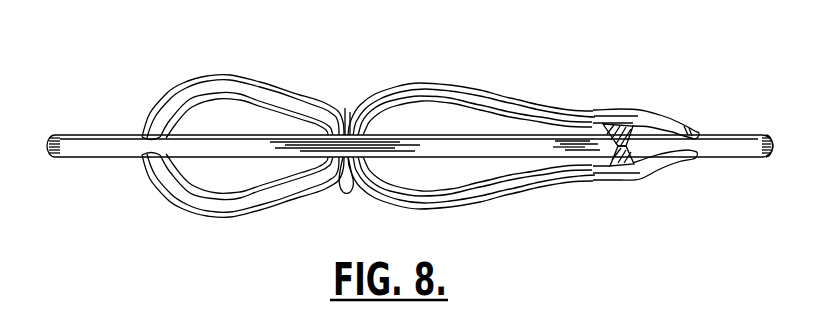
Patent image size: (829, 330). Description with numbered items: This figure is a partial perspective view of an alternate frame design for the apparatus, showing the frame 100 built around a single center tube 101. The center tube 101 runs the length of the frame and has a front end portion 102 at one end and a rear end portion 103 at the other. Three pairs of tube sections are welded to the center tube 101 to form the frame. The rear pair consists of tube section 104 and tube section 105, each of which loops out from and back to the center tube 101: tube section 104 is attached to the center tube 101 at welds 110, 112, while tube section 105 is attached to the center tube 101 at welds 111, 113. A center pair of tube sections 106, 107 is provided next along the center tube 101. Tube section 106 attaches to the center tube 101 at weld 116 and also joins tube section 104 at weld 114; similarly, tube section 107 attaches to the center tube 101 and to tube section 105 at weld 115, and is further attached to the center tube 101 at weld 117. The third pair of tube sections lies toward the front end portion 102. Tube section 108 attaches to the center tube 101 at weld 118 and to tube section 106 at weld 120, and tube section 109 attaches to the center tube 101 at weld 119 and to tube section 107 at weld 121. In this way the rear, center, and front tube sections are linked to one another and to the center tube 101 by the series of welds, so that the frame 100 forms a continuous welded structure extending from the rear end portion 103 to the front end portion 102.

The frame 100 is at (163, 64).
The center tube 101 is at (720, 150).
The front end portion 102 is at (758, 137).
The rear end portion 103 is at (48, 156).
The tube section 104 is at (254, 79).
The tube section 105 is at (273, 200).
The tube section 106 is at (540, 105).
The tube section 107 is at (580, 185).
The tube section 108 is at (690, 123).
The tube section 109 is at (637, 173).
The weld 110 is at (140, 132).
The weld 111 is at (140, 162).
The weld 112 is at (327, 127).
The weld 113 is at (330, 165).
The weld 114 is at (345, 104).
The weld 115 is at (342, 192).
The weld 116 is at (637, 140).
The weld 117 is at (612, 150).
The weld 118 is at (710, 128).
The weld 119 is at (706, 160).
The weld 120 is at (590, 111).
The weld 121 is at (593, 180).